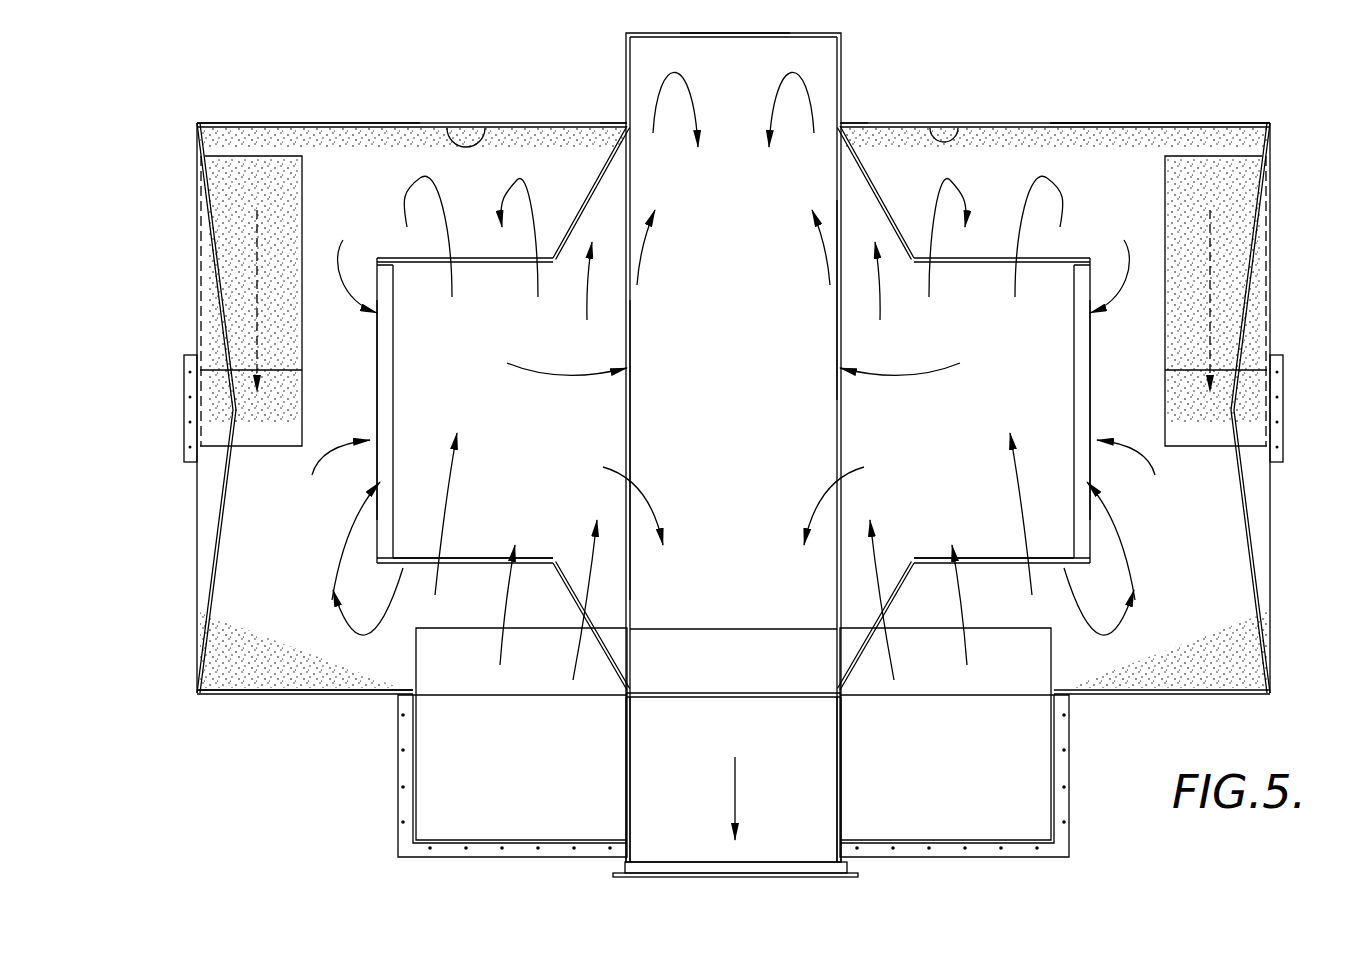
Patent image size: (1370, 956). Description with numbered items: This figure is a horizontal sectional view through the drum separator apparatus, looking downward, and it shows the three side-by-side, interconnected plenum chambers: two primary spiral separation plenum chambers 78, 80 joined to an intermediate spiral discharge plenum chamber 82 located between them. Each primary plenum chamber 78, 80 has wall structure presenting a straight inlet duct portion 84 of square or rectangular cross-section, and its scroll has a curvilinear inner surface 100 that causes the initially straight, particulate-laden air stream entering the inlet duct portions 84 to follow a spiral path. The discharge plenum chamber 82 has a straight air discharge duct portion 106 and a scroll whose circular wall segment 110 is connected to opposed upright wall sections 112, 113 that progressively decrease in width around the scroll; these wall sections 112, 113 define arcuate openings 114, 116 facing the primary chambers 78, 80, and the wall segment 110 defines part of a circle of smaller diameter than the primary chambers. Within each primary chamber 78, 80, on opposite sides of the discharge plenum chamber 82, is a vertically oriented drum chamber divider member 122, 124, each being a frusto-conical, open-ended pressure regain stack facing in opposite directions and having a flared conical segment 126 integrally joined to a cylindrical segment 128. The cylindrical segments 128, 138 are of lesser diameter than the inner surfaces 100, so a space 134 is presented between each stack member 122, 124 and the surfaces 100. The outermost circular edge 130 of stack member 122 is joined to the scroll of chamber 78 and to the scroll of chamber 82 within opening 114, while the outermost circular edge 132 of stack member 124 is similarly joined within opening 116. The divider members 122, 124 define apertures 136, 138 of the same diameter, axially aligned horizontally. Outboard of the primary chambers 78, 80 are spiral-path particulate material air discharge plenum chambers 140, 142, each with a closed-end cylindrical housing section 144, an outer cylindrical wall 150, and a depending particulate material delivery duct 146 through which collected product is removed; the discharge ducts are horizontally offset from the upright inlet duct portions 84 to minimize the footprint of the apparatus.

The primary spiral separation plenum chamber 78 is at (503, 118).
The primary spiral separation plenum chamber 80 is at (1032, 118).
The intermediate spiral discharge plenum chamber 82 is at (850, 38).
The inlet duct portion 84 is at (412, 805).
The curvilinear inner surface 100 is at (463, 127).
The air discharge duct portion 106 is at (655, 765).
The circular wall segment 110 is at (729, 37).
The upright wall section 112 is at (630, 437).
The upright wall section 113 is at (838, 318).
The arcuate opening 114 is at (630, 135).
The arcuate opening 116 is at (841, 135).
The drum chamber divider member 122 is at (333, 410).
The drum chamber divider member 124 is at (1090, 245).
The flared conical segment 126 is at (598, 172).
The cylindrical segment 128 is at (475, 568).
The outermost circular edge 130 is at (627, 125).
The outermost circular edge 132 is at (843, 127).
The space 134 is at (733, 225).
The aperture 136 is at (415, 262).
The aperture 138 is at (970, 262).
The particulate material air discharge plenum chamber 140 is at (222, 118).
The particulate material air discharge plenum chamber 142 is at (1272, 137).
The closed end cylindrical housing section 144 is at (195, 640).
The particulate material delivery duct 146 is at (245, 285).
The outer cylindrical wall 150 is at (300, 695).